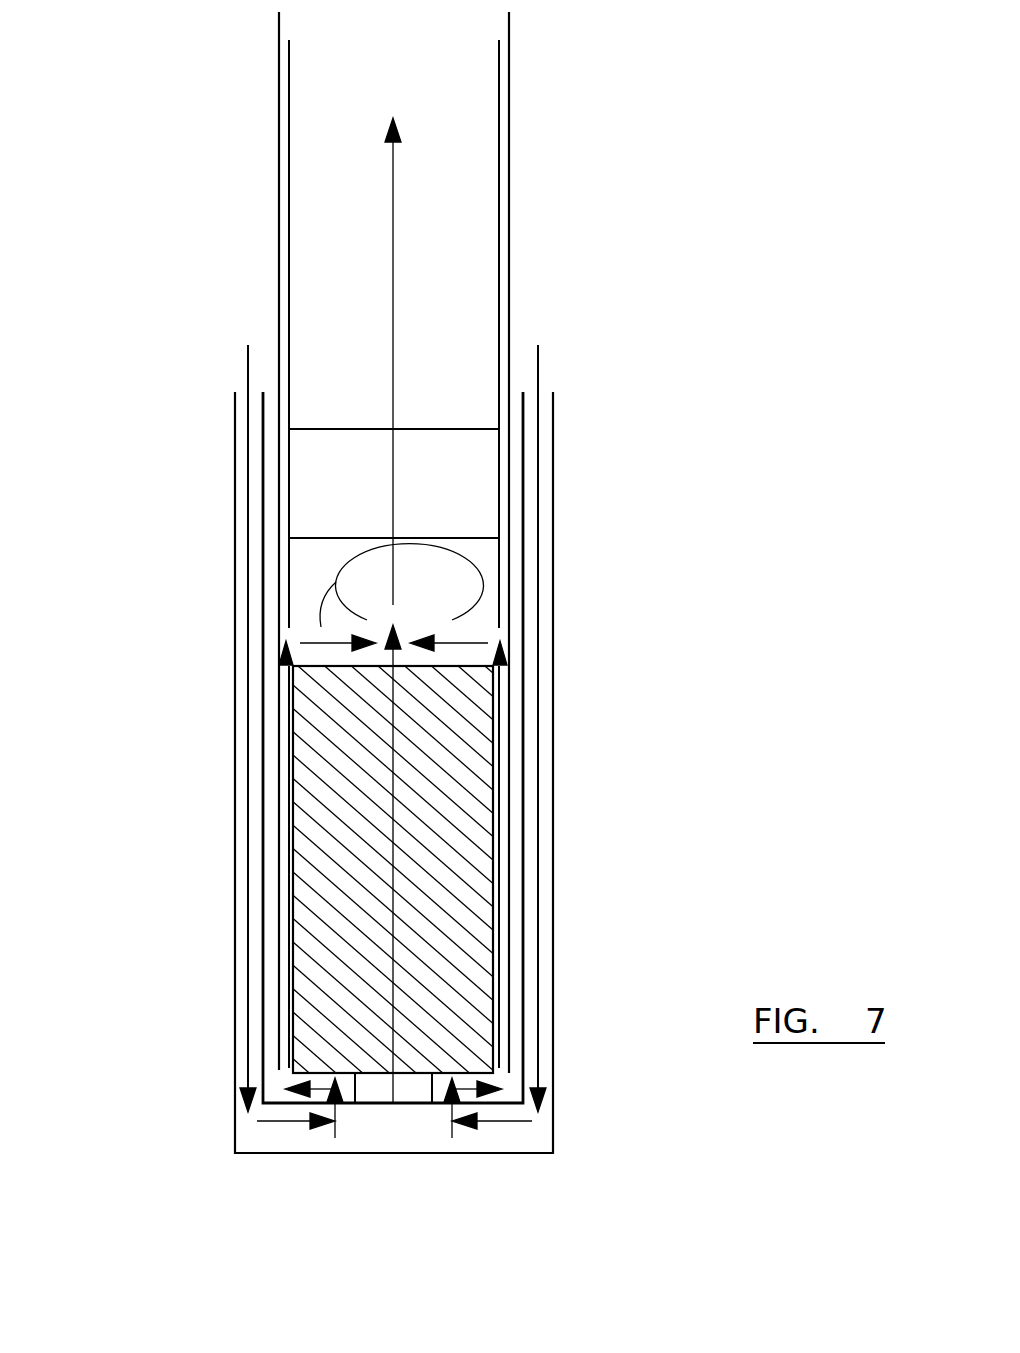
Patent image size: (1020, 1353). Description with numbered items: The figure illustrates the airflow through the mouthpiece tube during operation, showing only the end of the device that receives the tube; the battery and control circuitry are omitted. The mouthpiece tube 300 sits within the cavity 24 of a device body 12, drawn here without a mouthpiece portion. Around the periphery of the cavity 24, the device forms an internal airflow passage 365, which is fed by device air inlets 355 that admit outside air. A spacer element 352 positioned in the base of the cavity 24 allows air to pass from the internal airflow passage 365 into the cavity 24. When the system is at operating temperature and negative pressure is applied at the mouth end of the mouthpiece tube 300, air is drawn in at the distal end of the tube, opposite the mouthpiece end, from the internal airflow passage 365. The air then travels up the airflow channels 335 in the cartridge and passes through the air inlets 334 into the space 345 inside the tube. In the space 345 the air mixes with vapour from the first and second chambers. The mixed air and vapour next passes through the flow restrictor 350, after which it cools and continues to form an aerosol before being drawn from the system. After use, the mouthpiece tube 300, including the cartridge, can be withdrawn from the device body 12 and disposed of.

The device body 12 is at (553, 1117).
The cavity 24 is at (512, 835).
The inner tube 300 is at (510, 157).
The air inlets 334 is at (292, 640).
The airflow channels 335 is at (288, 830).
The space 345 is at (463, 595).
The flow restrictor 350 is at (470, 487).
The spacer element 352 is at (413, 1090).
The device air inlets 355 is at (240, 390).
The internal airflow passage 365 is at (248, 1000).